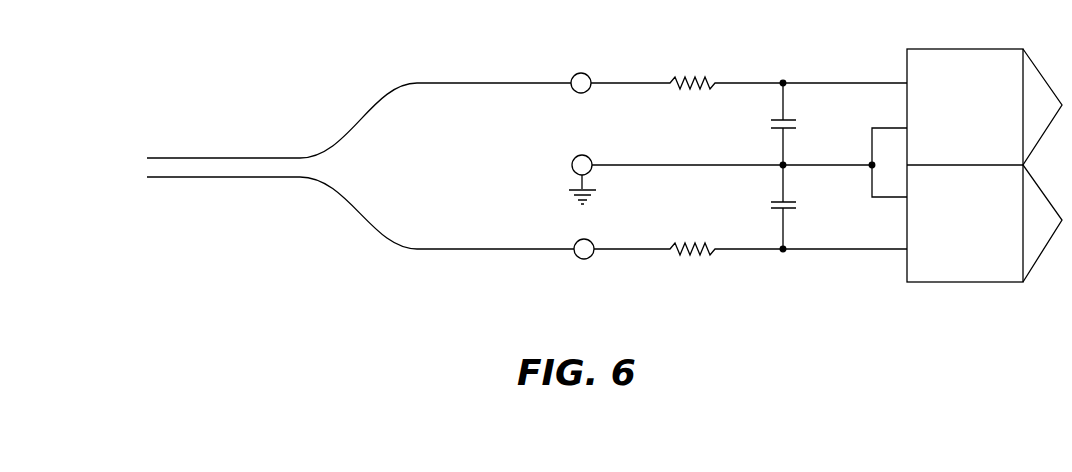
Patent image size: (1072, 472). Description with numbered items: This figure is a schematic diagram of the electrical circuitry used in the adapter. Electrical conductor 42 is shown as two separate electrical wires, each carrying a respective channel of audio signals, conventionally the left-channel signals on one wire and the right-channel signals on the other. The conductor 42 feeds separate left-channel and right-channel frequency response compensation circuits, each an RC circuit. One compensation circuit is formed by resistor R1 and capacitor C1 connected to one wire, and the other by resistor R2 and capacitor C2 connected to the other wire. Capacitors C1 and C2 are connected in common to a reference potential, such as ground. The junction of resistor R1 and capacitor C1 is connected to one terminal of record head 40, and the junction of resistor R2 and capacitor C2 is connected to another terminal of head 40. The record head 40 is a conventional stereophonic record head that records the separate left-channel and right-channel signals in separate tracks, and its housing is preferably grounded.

The electrical conductor 42 is at (241, 156).
The resistor R1 is at (694, 82).
The resistor R2 is at (700, 248).
The capacitor C1 is at (797, 126).
The capacitor C2 is at (797, 206).
The record head 40 is at (1071, 38).